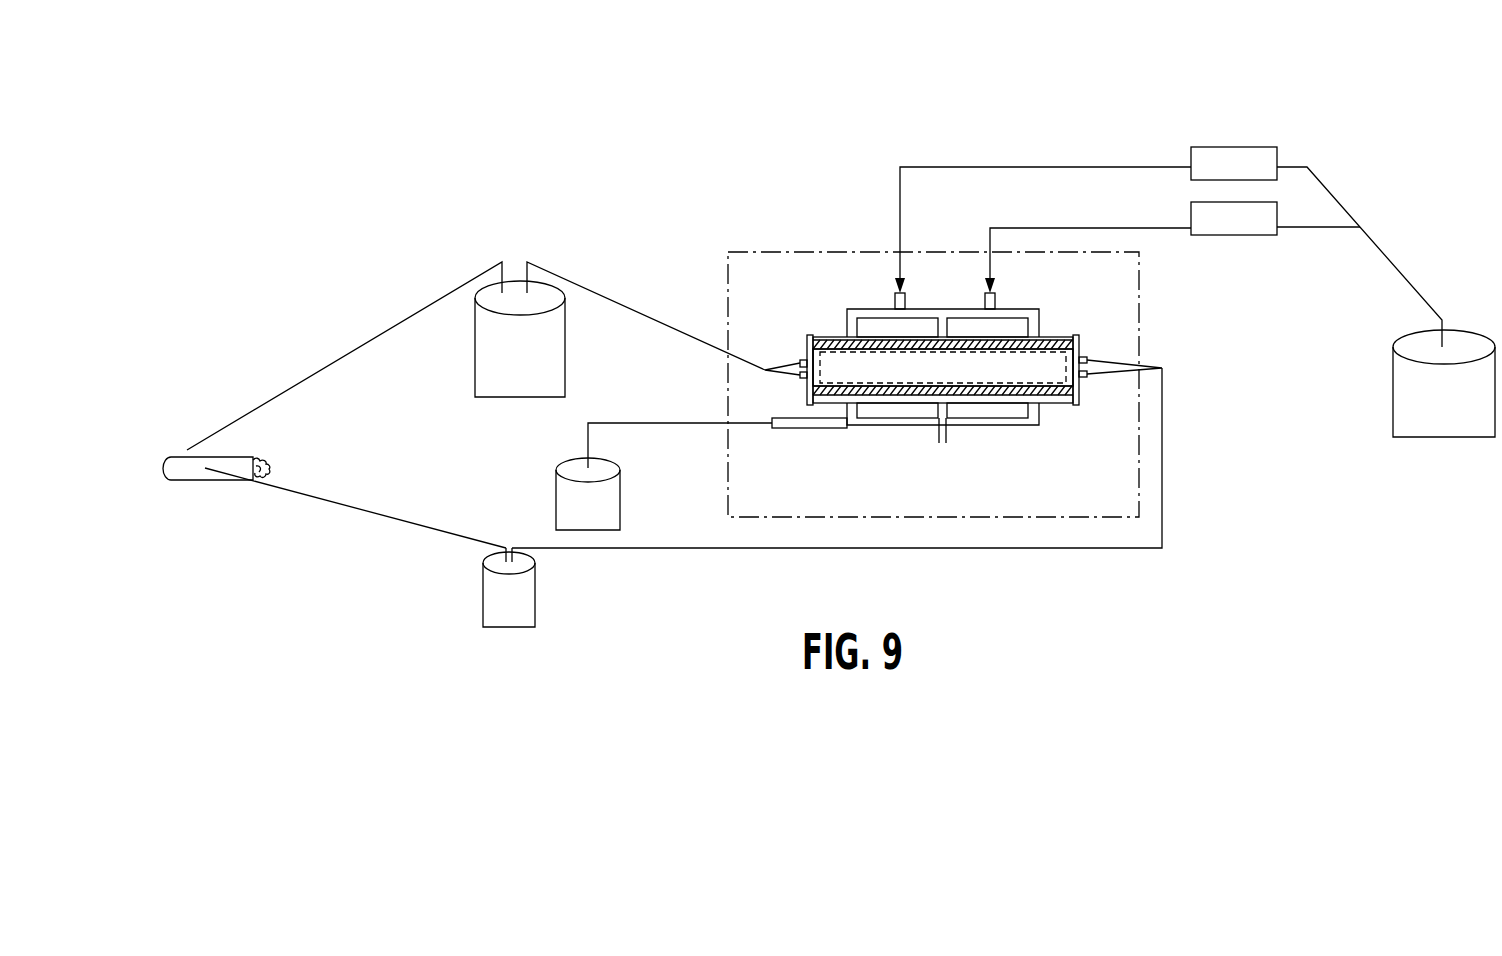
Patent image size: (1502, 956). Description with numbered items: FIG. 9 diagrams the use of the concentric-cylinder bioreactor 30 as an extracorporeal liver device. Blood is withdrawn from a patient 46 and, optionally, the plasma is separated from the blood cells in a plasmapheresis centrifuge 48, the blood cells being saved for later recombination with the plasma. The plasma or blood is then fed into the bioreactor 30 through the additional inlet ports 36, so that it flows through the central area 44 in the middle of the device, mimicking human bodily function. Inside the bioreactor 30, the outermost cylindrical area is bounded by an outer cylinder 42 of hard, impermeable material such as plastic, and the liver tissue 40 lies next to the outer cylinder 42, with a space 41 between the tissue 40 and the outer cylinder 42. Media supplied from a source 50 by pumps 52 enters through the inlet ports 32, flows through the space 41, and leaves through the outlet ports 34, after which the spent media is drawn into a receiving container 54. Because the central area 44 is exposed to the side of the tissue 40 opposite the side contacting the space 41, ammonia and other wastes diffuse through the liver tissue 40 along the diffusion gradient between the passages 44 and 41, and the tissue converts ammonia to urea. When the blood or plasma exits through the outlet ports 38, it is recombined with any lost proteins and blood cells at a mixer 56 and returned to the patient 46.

The bioreactor 30 is at (823, 308).
The inlet ports 32 is at (985, 298).
The outlet ports 34 is at (1028, 426).
The additional inlet ports 36 is at (800, 362).
The outlet ports 38 is at (1087, 358).
The tissue 40 is at (1053, 346).
The space 41 is at (1047, 338).
The outer cylinder 42 is at (1063, 405).
The central area 44 is at (995, 383).
The patient 46 is at (183, 471).
The plasmapheresis centrifuge 48 is at (530, 378).
The source 50 is at (1463, 415).
The pumps 52 is at (1278, 215).
The receiving container 54 is at (607, 527).
The mixer 56 is at (528, 620).